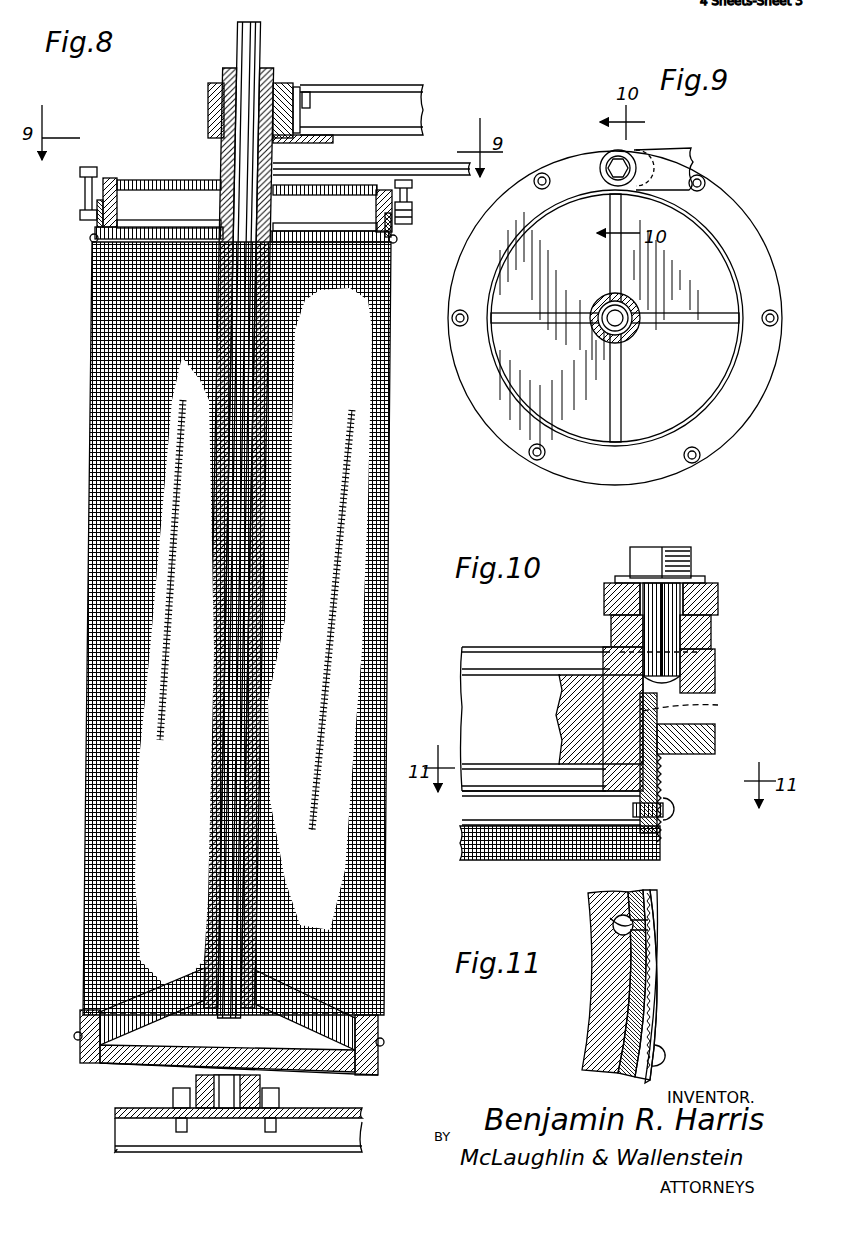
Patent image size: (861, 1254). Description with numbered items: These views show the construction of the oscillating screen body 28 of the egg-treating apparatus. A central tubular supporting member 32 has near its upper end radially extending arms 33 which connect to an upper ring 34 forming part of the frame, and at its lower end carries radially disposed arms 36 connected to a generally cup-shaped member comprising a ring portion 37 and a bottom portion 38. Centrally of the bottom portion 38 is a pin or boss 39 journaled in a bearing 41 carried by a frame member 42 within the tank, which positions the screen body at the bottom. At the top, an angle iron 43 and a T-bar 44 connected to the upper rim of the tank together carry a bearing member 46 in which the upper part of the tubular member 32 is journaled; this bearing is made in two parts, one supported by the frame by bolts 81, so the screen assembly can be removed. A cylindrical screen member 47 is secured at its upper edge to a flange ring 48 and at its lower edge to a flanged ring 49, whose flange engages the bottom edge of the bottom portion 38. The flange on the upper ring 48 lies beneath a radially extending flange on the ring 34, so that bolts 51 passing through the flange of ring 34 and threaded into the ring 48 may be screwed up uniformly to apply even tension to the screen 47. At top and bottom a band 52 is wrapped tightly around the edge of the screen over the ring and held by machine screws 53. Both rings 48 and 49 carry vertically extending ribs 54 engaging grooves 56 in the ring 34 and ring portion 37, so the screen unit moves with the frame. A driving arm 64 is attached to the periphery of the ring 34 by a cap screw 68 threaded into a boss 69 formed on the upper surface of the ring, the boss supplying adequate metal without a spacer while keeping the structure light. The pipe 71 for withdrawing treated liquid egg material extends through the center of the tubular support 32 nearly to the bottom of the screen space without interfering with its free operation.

In FIG. 8, the strainer assembly 28 is at (209, 628).
In FIG. 8, the central tubular supporting member 32 is at (216, 75).
In FIG. 9, the central tubular supporting member 32 is at (594, 305).
In FIG. 8, the radially extending arms 33 is at (148, 196).
In FIG. 9, the radially extending arms 33 is at (630, 340).
In FIG. 10, the radially extending arms 33 is at (466, 704).
In FIG. 8, the upper ring 34 is at (110, 182).
In FIG. 9, the upper ring 34 is at (482, 408).
In FIG. 10, the upper ring 34 is at (716, 664).
In FIG. 11, the upper ring 34 is at (598, 1044).
In FIG. 8, the radially disposed arms 36 is at (320, 1013).
In FIG. 8, the ring portion 37 is at (110, 1012).
In FIG. 8, the bottom portion 38 is at (120, 1064).
In FIG. 8, the pin or boss 39 is at (226, 1112).
In FIG. 8, the bearing 41 is at (262, 1083).
In FIG. 8, the frame member 42 is at (126, 1133).
In FIG. 8, the angle iron 43 is at (300, 87).
In FIG. 8, the T-bar 44 is at (400, 92).
In FIG. 8, the bearing member 46 is at (282, 84).
In FIG. 8, the cylindrical screen member 47 is at (86, 797).
In FIG. 8, the flange ring 48 is at (98, 226).
In FIG. 10, the flange ring 48 is at (664, 766).
In FIG. 11, the flange ring 48 is at (643, 1006).
In FIG. 8, the flanged ring 49 is at (82, 1064).
In FIG. 8, the bolts 51 is at (82, 200).
In FIG. 9, the bolts 51 is at (546, 173).
In FIG. 10, the band 52 is at (668, 832).
In FIG. 11, the band 52 is at (661, 960).
In FIG. 8, the machine screws 53 is at (398, 240).
In FIG. 10, the machine screws 53 is at (676, 808).
In FIG. 11, the machine screws 53 is at (668, 1055).
In FIG. 10, the vertically extending ribs 54 is at (633, 811).
In FIG. 11, the vertically extending ribs 54 is at (645, 930).
In FIG. 10, the grooves 56 is at (697, 706).
In FIG. 11, the grooves 56 is at (612, 924).
In FIG. 8, the driving arm 64 is at (436, 164).
In FIG. 9, the driving arm 64 is at (692, 155).
In FIG. 10, the driving arm 64 is at (718, 585).
In FIG. 9, the cap screw 68 is at (627, 160).
In FIG. 10, the cap screw 68 is at (648, 548).
In FIG. 10, the boss 69 is at (703, 636).
In FIG. 8, the pipe 71 is at (238, 30).
In FIG. 9, the pipe 71 is at (606, 340).
In FIG. 8, the bolts 81 is at (312, 106).